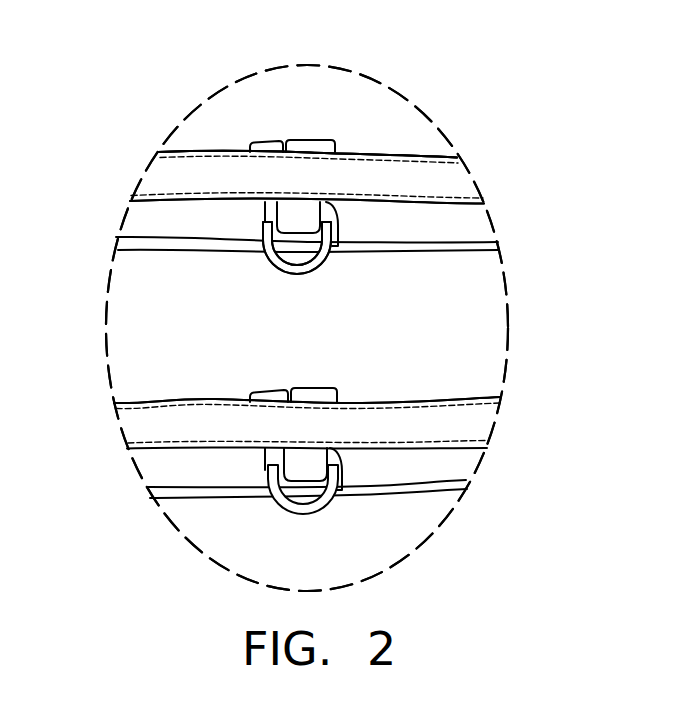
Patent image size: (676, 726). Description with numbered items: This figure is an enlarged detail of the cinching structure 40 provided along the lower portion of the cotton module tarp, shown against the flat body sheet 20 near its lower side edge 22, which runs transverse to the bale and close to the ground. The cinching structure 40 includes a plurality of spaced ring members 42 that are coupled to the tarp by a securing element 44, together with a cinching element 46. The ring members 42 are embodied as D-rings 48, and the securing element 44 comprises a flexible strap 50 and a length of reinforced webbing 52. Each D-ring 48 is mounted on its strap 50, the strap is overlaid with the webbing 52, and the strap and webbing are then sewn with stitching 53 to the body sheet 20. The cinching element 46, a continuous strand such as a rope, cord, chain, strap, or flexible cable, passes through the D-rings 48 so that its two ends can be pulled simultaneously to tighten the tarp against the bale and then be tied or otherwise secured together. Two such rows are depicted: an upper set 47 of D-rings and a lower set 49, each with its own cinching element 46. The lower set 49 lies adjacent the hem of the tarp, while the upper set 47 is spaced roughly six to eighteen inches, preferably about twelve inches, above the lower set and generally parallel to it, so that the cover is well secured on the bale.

The body sheet 20 is at (300, 113).
The lower side edge 22 is at (176, 455).
The cinching structure 40 is at (481, 143).
The ring member 42 is at (338, 270).
The securing element 44 is at (490, 182).
The cinching element 46 is at (497, 243).
The upper set of D-rings 47 is at (257, 229).
The D-ring 48 is at (273, 264).
The lower set of D-rings 49 is at (278, 515).
The flexible strap 50 is at (329, 141).
The reinforced webbing 52 is at (155, 165).
The stitching 53 is at (407, 156).